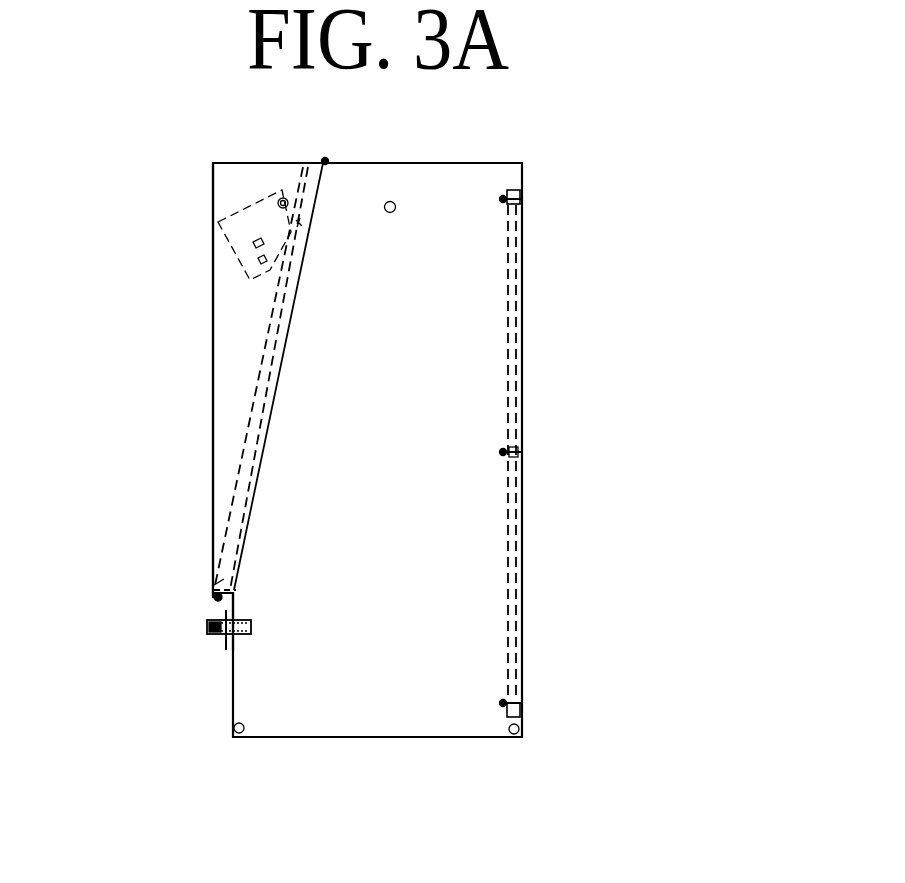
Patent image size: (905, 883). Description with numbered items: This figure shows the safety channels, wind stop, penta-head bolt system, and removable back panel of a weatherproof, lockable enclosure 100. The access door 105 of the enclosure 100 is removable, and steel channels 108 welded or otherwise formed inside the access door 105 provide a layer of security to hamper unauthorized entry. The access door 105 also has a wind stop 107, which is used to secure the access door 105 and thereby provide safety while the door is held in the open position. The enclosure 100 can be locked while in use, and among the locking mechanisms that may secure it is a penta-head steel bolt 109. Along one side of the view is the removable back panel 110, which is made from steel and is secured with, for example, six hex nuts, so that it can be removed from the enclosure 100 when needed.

The enclosure 100 is at (535, 274).
The access door 105 is at (230, 331).
The wind stop 107 is at (251, 228).
The steel channels 108 is at (240, 512).
The penta-head steel bolt 109 is at (210, 625).
The removable back panel 110 is at (511, 560).